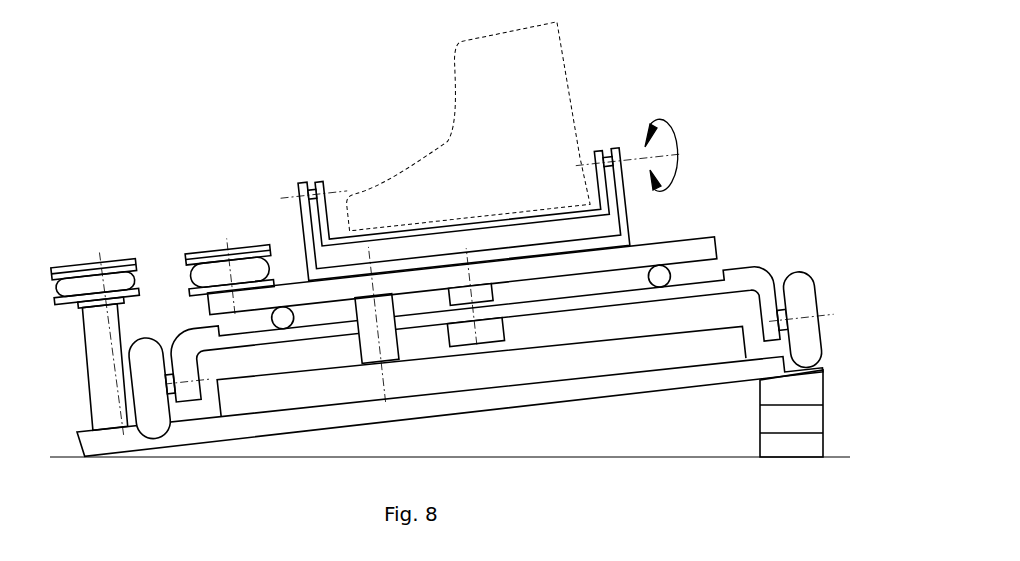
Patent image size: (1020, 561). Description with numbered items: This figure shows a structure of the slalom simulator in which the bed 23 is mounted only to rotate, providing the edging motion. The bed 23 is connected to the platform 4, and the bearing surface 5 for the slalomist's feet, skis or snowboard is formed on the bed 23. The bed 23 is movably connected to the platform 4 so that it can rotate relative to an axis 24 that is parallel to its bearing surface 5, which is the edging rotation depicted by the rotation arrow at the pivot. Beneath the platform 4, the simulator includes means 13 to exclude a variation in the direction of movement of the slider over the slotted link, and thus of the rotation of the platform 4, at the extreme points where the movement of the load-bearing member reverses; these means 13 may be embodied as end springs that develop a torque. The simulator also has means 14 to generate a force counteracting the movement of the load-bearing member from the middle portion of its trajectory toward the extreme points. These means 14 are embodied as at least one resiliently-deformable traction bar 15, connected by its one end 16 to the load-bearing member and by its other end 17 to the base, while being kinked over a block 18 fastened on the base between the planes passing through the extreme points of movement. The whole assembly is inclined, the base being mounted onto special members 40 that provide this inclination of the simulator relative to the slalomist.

The platform 4 is at (690, 248).
The bearing surface 5 is at (389, 238).
The means to exclude a variation in a direction of movement of the slider 13 is at (50, 150).
The means to generate a counteracting force 14 is at (93, 200).
The resiliently-deformable traction bar 15 is at (163, 262).
The one end of the traction bar 16 is at (230, 253).
The other end of the traction bar 17 is at (130, 194).
The block 18 is at (98, 258).
The bed 23 is at (328, 208).
The axis 24 is at (630, 157).
The special members 40 is at (787, 440).